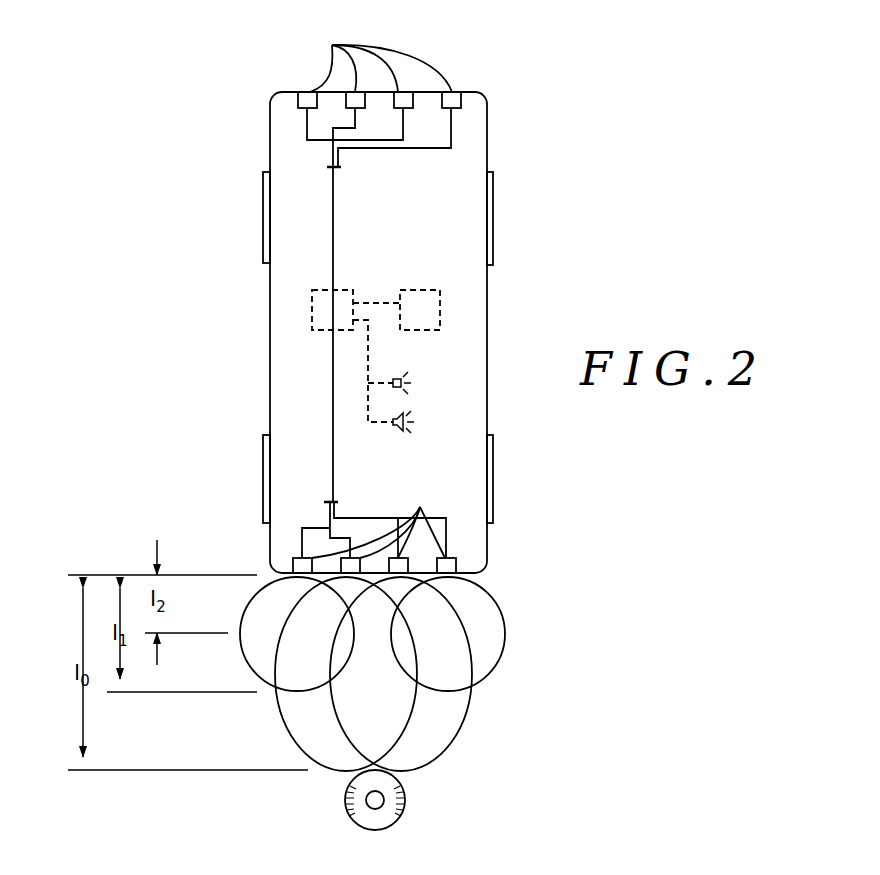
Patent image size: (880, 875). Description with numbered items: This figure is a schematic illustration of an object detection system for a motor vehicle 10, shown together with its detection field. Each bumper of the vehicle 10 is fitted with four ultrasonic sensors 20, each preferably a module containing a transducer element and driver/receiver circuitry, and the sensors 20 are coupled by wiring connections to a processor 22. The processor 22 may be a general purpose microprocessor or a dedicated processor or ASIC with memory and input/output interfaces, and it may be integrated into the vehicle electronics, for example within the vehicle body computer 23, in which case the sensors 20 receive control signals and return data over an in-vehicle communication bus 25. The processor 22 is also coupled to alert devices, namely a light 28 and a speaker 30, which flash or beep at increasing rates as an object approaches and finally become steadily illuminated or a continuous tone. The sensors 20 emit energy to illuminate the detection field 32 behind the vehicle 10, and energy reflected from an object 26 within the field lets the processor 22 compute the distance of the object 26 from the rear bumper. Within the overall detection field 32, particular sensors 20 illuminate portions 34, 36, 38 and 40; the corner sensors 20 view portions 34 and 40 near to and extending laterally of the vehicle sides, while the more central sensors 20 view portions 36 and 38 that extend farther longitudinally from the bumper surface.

The motor vehicle 10 is at (500, 128).
The ultrasonic sensors 20 is at (377, 302).
The processor 22 is at (318, 311).
The vehicle body computer 23 is at (436, 312).
The in-vehicle communication bus 25 is at (373, 303).
The object 26 is at (392, 814).
The light 28 is at (397, 379).
The speaker 30 is at (401, 430).
The detection field 32 is at (379, 694).
The portion of detection field 34 is at (258, 614).
The portion of detection field 36 is at (296, 729).
The portion of detection field 38 is at (458, 716).
The portion of detection field 40 is at (498, 627).